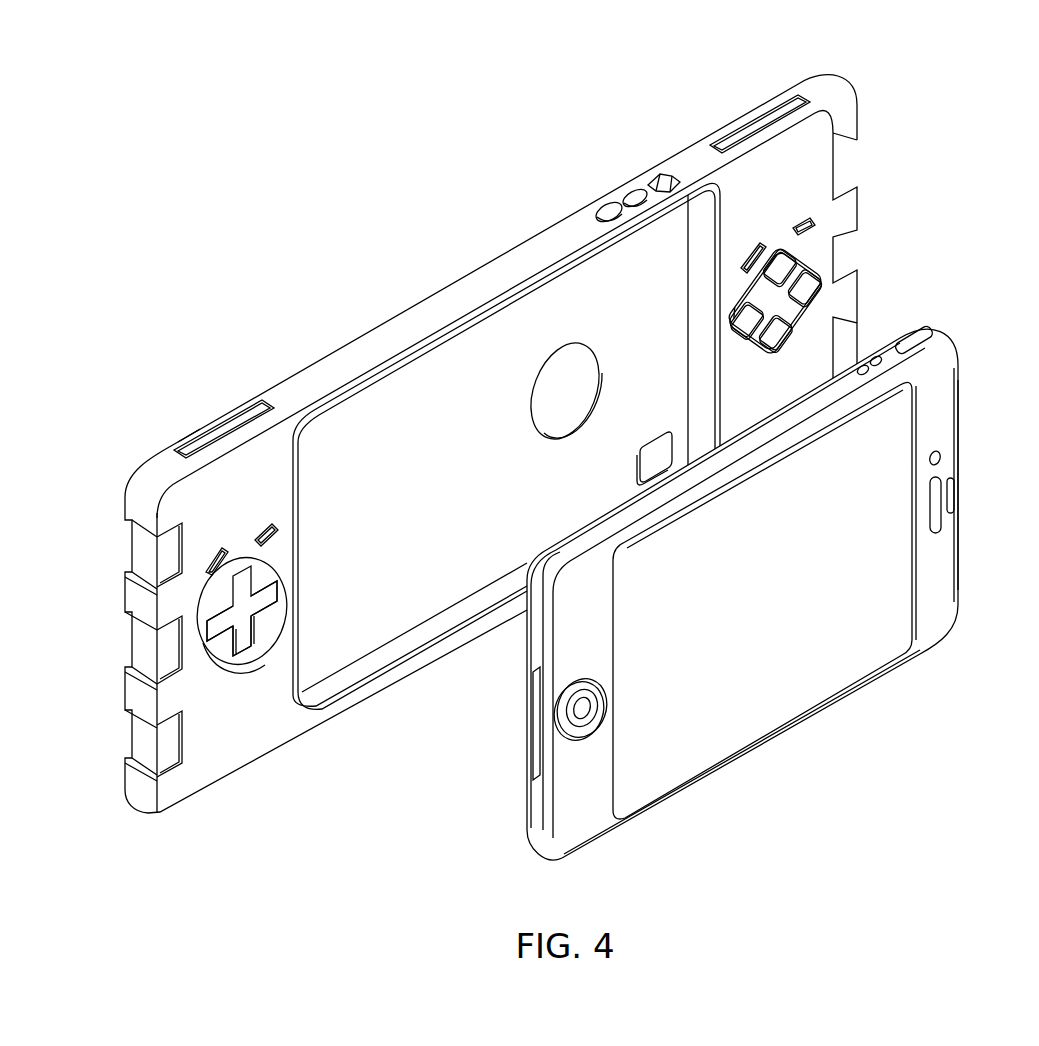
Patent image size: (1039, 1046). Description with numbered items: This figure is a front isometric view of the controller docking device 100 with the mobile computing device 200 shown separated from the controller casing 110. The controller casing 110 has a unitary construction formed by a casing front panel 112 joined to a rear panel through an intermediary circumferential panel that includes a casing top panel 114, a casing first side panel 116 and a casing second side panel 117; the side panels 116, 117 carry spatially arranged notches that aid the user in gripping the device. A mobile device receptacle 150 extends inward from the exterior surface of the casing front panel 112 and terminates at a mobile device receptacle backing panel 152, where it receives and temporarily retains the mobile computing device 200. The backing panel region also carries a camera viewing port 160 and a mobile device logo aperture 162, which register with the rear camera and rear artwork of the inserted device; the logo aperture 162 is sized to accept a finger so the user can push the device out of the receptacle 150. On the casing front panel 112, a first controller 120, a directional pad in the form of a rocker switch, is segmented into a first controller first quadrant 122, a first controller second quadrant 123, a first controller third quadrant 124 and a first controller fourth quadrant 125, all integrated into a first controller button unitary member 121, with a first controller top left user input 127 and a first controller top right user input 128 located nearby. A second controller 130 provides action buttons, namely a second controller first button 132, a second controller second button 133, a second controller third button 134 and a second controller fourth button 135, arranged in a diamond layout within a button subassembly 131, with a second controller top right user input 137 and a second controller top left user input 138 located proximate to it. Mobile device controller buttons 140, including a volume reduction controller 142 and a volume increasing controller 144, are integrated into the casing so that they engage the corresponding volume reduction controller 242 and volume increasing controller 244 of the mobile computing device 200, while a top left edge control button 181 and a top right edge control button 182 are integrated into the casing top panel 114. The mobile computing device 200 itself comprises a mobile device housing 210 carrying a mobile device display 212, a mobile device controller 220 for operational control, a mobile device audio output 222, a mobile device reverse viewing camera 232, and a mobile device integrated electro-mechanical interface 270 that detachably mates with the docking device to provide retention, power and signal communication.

The controller docking device 100 is at (241, 278).
The controller casing 110 is at (325, 752).
The casing front panel 112 is at (225, 760).
The casing top panel 114 is at (425, 320).
The casing first side panel 116 is at (140, 750).
The casing second side panel 117 is at (858, 158).
The first controller 120 is at (212, 624).
The first controller button unitary member 121 is at (210, 590).
The first controller first quadrant 122 is at (268, 594).
The first controller second quadrant 123 is at (262, 615).
The first controller third quadrant 124 is at (238, 662).
The first controller fourth quadrant 125 is at (215, 637).
The first controller top left user input 127 is at (208, 565).
The first controller top right user input 128 is at (262, 528).
The second controller 130 is at (827, 294).
The button subassembly 131 is at (790, 305).
The second controller first button 132 is at (800, 265).
The second controller second button 133 is at (805, 285).
The second controller third button 134 is at (830, 332).
The second controller fourth button 135 is at (750, 338).
The second controller top right user input 137 is at (808, 228).
The second controller top left user input 138 is at (752, 255).
The mobile device controller buttons 140 is at (596, 155).
The volume reduction controller 142 is at (603, 208).
The volume increasing controller 144 is at (636, 198).
The mobile device receptacle 150 is at (700, 243).
The mobile device receptacle backing panel 152 is at (430, 600).
The camera viewing port 160 is at (642, 455).
The mobile device logo aperture 162 is at (545, 395).
The top left edge control button 181 is at (228, 432).
The top right edge control button 182 is at (760, 148).
The mobile computing device 200 is at (723, 608).
The mobile device housing 210 is at (940, 660).
The mobile device display 212 is at (750, 710).
The mobile device controller 220 is at (585, 712).
The mobile device audio output 222 is at (922, 510).
The mobile device reverse viewing camera 232 is at (925, 460).
The volume reduction controller 242 is at (885, 368).
The volume increasing controller 244 is at (925, 338).
The mobile device integrated electro-mechanical interface 270 is at (535, 730).